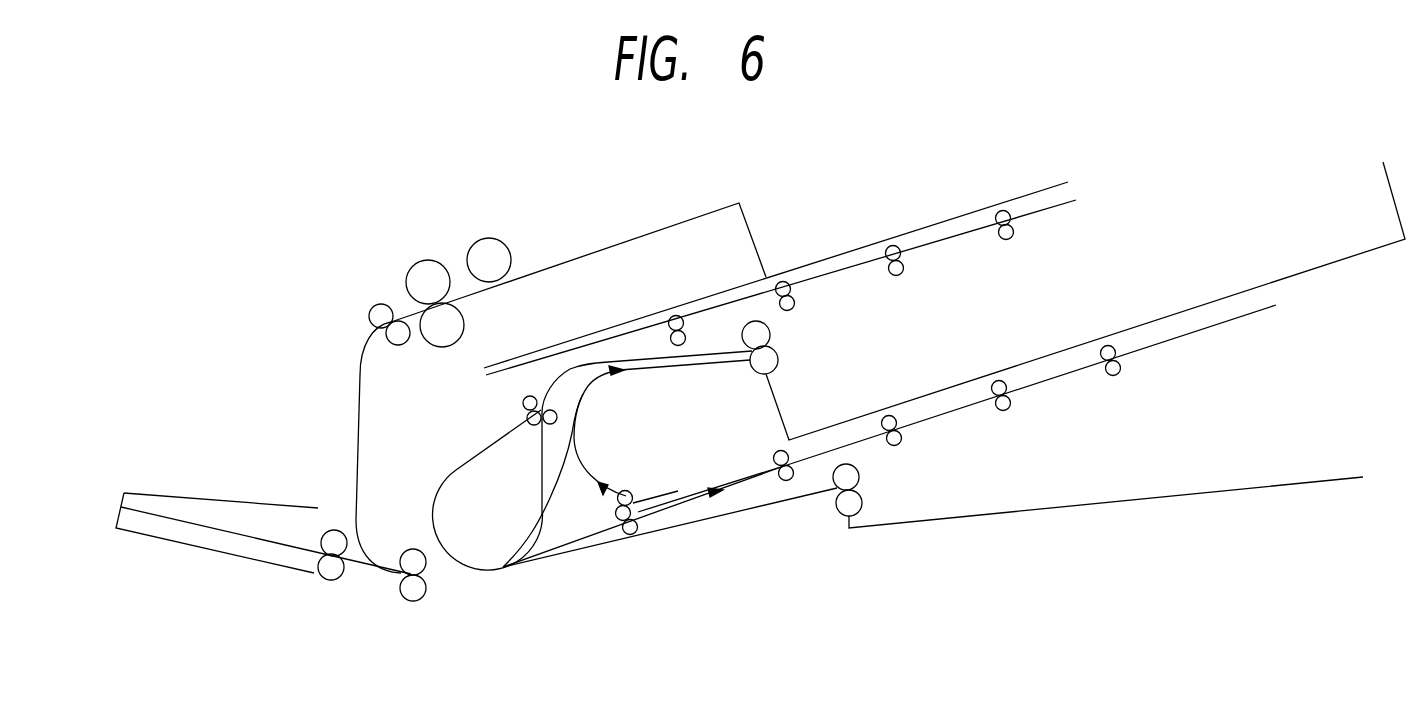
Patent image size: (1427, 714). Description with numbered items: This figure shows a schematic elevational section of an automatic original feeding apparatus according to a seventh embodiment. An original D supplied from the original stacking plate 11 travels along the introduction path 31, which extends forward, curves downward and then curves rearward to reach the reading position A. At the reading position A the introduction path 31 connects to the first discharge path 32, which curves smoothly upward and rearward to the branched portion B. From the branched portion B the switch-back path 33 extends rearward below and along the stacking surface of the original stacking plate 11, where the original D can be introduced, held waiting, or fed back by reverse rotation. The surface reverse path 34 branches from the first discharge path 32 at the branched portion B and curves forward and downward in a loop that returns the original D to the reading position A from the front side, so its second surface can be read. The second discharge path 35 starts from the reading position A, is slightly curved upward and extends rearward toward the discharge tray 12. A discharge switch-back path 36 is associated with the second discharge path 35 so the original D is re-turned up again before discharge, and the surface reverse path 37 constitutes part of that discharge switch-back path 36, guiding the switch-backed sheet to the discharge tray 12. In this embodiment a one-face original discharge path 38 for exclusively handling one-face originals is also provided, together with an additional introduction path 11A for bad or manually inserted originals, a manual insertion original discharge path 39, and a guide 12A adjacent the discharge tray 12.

The original stacking plate 11 is at (796, 260).
The additional introduction path 11A is at (251, 532).
The discharge tray 12 is at (866, 404).
The discharge tray guide 12A is at (998, 503).
The introduction path 31 is at (350, 419).
The first discharge path 32 is at (520, 534).
The switch-back path 33 is at (841, 271).
The surface reverse path 34 is at (463, 452).
The second discharge path 35 is at (609, 525).
The discharge switch-back path 36 is at (958, 400).
The surface reverse path 37 is at (568, 443).
The one-face original discharge path 38 is at (548, 480).
The manual insertion original discharge path 39 is at (751, 500).
The reading position A is at (495, 564).
The branched portion B is at (533, 399).
The original D is at (621, 259).